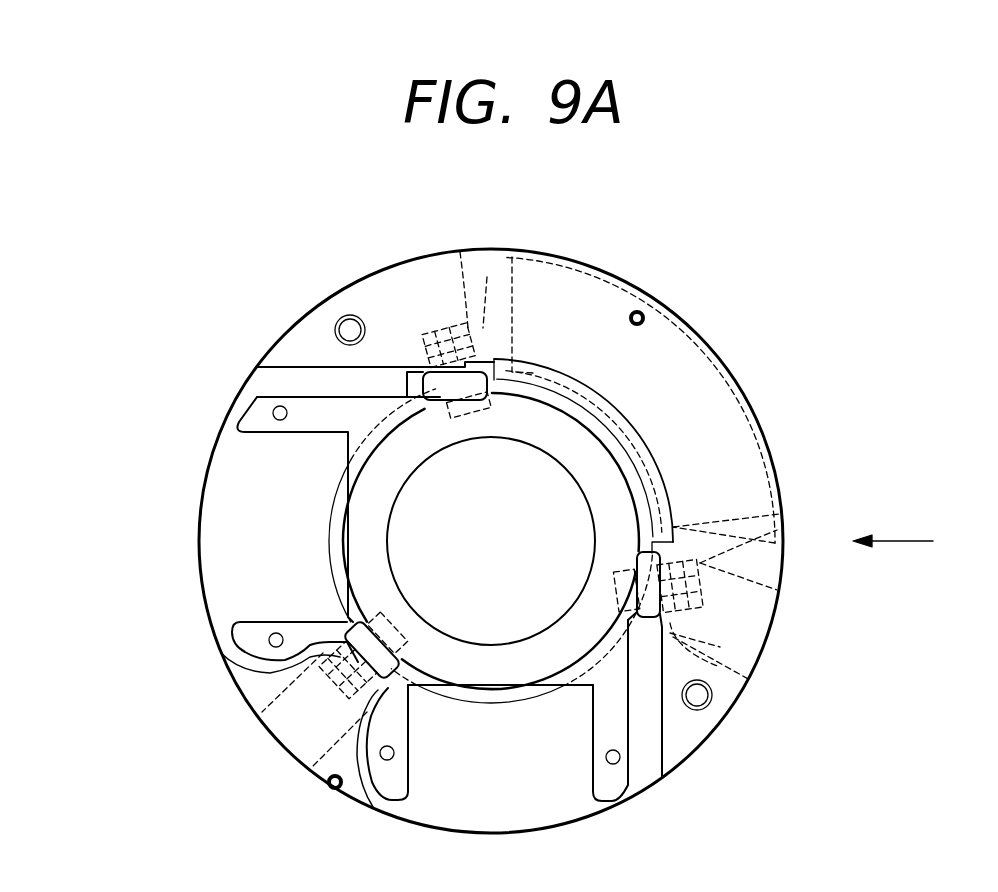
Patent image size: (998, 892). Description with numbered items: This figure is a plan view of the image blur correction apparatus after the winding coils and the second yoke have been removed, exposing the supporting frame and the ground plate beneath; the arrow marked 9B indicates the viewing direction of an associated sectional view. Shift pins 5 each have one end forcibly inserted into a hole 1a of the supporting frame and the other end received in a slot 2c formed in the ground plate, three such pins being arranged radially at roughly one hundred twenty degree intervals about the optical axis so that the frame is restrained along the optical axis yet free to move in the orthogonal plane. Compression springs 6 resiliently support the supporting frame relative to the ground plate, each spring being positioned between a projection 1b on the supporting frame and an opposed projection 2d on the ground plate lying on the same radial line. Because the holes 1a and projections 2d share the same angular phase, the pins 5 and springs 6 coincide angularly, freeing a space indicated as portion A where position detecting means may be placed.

The space portion A is at (703, 388).
The hole 1a is at (663, 523).
The projection 1b is at (515, 410).
The shift pin 5 is at (679, 565).
The compression spring 6 is at (480, 330).
The slot 2c is at (695, 638).
The projection 2d is at (428, 333).
The section line 9B is at (924, 543).